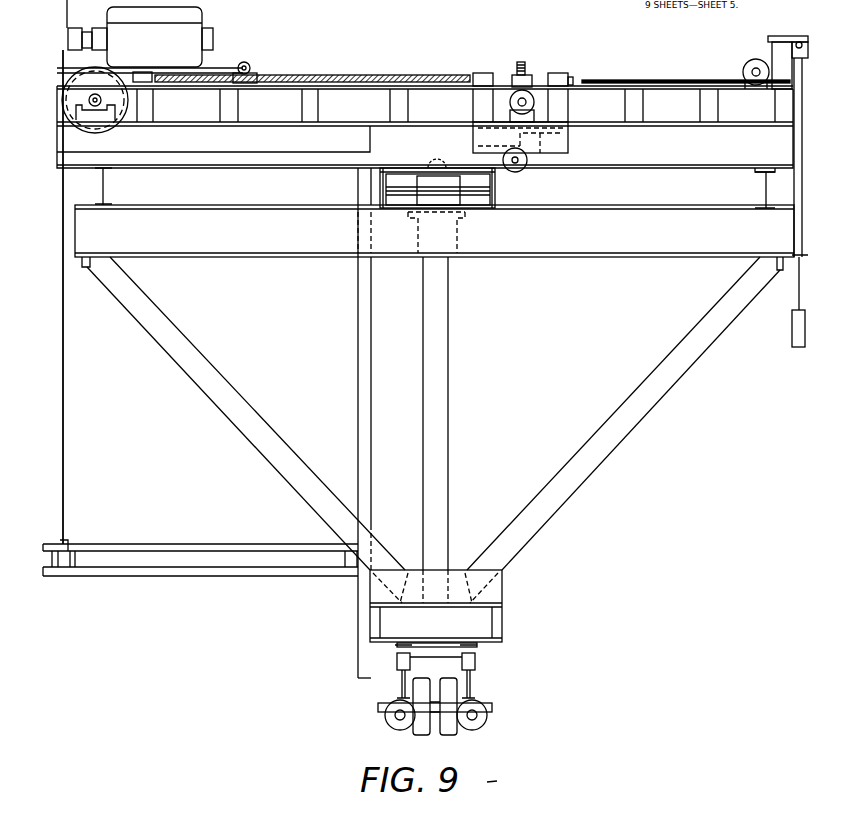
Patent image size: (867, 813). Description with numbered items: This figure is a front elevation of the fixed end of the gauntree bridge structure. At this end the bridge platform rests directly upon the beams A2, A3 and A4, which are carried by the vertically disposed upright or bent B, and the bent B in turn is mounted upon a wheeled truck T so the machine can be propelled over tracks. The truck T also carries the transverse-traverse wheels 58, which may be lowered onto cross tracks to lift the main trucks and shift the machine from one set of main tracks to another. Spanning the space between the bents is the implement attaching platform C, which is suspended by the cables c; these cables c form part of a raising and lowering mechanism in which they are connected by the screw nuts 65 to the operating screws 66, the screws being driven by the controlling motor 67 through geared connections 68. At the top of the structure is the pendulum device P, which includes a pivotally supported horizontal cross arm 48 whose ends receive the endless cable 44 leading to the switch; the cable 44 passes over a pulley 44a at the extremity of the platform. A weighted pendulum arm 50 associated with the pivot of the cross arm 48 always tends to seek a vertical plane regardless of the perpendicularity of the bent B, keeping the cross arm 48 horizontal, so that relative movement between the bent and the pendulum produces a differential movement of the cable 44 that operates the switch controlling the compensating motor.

The screw nuts 65 is at (258, 76).
The operating screws 66 is at (332, 76).
The geared connections 68 is at (521, 62).
The endless cable 44 is at (592, 81).
The pulley 44a is at (744, 70).
The horizontal cross arm 48 is at (771, 48).
The controlling motor 67 is at (510, 103).
The beam A2 is at (425, 127).
The beam A3 is at (490, 194).
The beam A4 is at (434, 231).
The pendulum device P is at (810, 157).
The weighted pendulum arm 50 is at (812, 181).
The bent B is at (432, 423).
The implement attaching platform C is at (249, 558).
The cables c is at (66, 474).
The wheeled truck T is at (494, 675).
The transverse-traverse wheels 58 is at (388, 722).